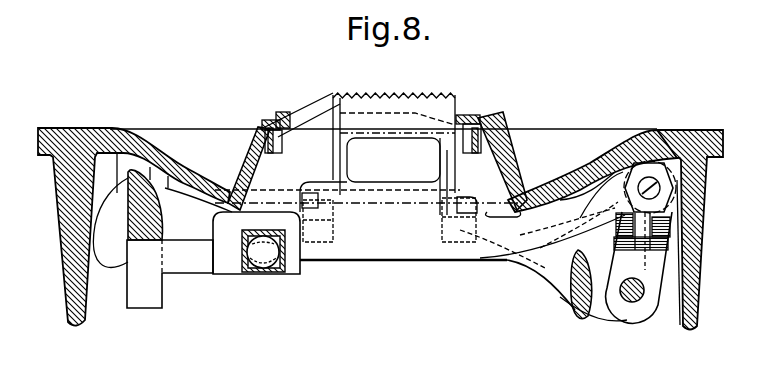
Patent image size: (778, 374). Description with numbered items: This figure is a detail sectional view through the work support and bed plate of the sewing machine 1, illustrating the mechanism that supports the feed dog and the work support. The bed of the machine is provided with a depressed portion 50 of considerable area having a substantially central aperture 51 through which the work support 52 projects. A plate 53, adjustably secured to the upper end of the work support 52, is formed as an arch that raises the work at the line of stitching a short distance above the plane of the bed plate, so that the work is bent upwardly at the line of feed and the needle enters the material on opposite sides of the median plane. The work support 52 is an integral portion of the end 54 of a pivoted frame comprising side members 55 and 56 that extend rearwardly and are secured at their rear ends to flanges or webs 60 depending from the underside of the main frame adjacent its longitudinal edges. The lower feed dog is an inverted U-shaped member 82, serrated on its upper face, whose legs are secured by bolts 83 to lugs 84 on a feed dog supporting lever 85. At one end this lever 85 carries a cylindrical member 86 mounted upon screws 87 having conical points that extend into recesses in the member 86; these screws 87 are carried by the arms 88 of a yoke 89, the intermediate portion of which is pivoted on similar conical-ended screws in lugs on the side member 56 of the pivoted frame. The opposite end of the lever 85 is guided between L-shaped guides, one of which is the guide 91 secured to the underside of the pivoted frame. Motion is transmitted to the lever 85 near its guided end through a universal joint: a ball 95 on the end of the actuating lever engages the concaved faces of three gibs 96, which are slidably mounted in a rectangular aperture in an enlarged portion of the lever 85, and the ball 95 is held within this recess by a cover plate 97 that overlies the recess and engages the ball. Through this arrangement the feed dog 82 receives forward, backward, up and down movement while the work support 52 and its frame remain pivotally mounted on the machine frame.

The machine frame 1 is at (667, 130).
The depressed portion 50 is at (542, 190).
The central aperture 51 is at (520, 200).
The work support 52 is at (497, 137).
The plate 53 is at (460, 113).
The end of frame 54 is at (538, 275).
The side member 55 is at (160, 228).
The side member 56 is at (572, 301).
The flanges or webs 60 is at (84, 321).
The inverted U-shaped member 82 is at (413, 128).
The bolts 83 is at (320, 205).
The lugs 84 is at (333, 234).
The feed dog supporting lever 85 is at (393, 257).
The cylindrical member 86 is at (698, 178).
The screws 87 is at (648, 177).
The arms of yoke 88 is at (672, 221).
The yoke 89 is at (672, 257).
The L-shaped guide 91 is at (158, 295).
The ball 95 is at (268, 268).
The gibs 96 is at (266, 231).
The cover plate 97 is at (251, 273).